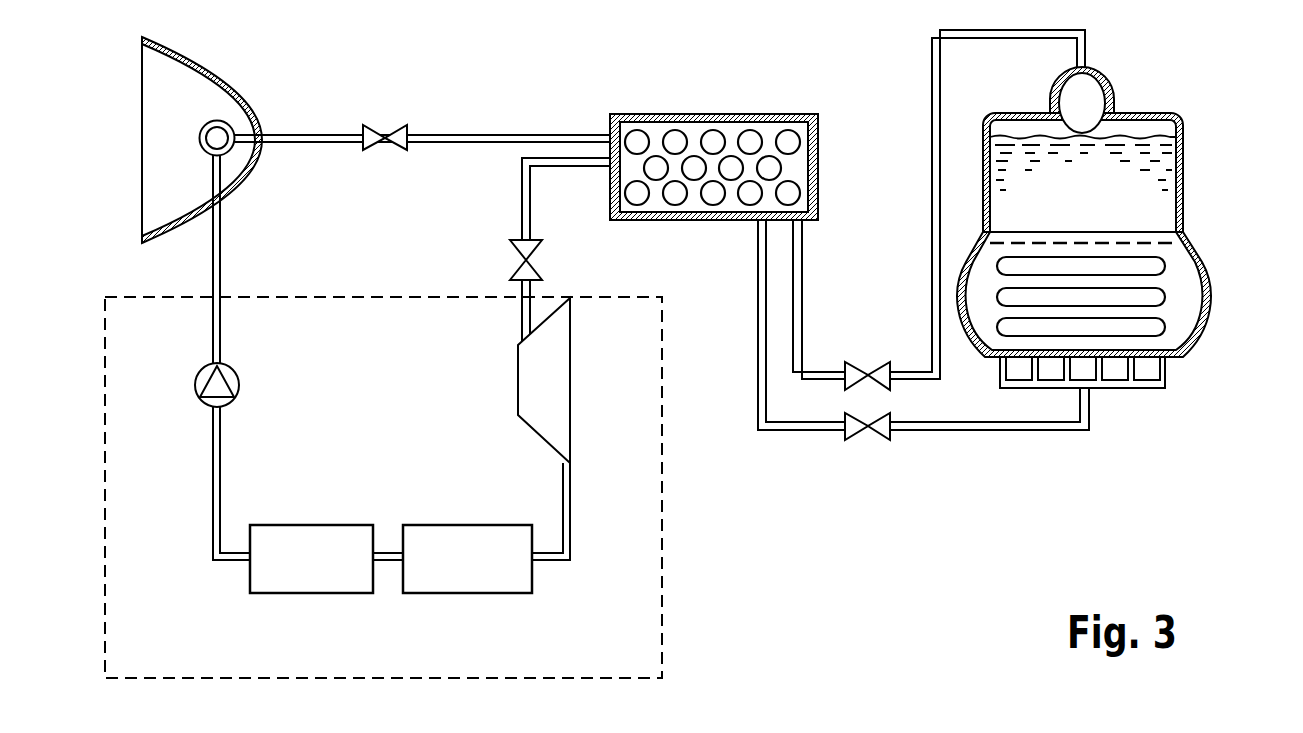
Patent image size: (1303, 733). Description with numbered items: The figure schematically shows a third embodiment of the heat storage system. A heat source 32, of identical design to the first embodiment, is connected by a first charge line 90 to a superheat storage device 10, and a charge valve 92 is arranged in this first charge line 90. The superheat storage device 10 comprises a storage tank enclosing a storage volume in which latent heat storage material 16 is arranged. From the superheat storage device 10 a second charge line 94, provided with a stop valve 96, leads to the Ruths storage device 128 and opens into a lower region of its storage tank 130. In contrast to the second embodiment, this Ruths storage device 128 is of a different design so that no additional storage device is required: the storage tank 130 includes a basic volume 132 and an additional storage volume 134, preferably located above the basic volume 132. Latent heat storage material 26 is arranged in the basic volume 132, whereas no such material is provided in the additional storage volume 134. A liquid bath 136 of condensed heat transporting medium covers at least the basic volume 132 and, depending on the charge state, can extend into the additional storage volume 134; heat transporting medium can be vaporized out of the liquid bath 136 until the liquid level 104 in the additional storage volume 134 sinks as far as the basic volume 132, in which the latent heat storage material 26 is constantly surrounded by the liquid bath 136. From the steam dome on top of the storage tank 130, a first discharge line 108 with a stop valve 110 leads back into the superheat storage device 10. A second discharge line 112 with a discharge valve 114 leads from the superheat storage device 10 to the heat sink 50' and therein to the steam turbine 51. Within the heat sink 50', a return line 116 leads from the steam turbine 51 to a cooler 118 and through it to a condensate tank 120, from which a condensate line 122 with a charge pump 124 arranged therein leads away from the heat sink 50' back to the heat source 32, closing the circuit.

The superheat storage device 10 is at (686, 110).
The latent heat storage material 16 is at (712, 198).
The latent heat storage material 26 is at (1150, 298).
The heat source 32 is at (228, 150).
The heat sink 50' is at (415, 487).
The steam turbine 51 is at (557, 386).
The first charge line 90 is at (316, 130).
The charge valve 92 is at (388, 128).
The second charge line 94 is at (784, 432).
The stop valve 96 is at (858, 440).
The liquid level 104 is at (1137, 132).
The first discharge line 108 is at (932, 62).
The stop valve 110 is at (857, 372).
The second discharge line 112 is at (522, 200).
The discharge valve 114 is at (532, 268).
The return line 116 is at (570, 522).
The cooler 118 is at (463, 583).
The condensate tank 120 is at (313, 583).
The condensate line 122 is at (212, 494).
The charge pump 124 is at (197, 378).
The Ruths storage device 128 is at (1190, 358).
The storage tank 130 is at (1183, 186).
The basic volume 132 is at (1182, 274).
The additional storage volume 134 is at (1157, 168).
The liquid bath 136 is at (1190, 243).